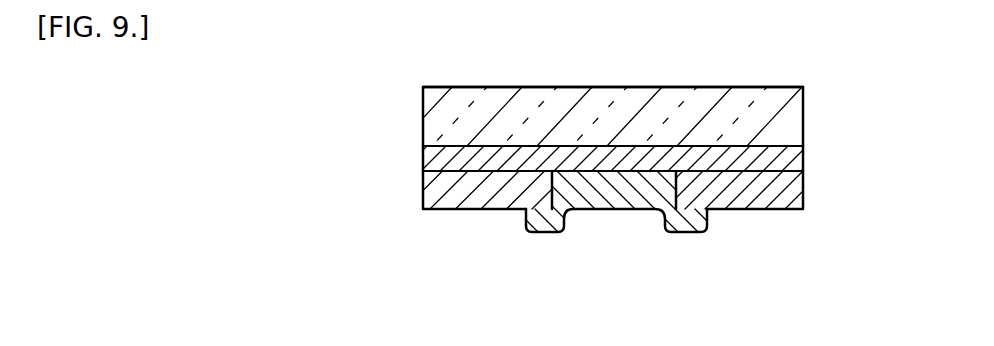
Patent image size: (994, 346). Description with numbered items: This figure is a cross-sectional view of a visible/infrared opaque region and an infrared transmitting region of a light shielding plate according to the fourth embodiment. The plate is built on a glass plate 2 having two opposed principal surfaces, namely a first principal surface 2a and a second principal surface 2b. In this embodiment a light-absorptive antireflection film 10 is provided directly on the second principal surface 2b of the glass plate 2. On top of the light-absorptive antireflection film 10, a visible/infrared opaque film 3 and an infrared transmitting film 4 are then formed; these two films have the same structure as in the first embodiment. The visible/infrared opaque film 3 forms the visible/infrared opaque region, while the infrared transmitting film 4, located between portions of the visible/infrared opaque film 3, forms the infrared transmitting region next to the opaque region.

The glass plate 2 is at (803, 120).
The first principal surface 2a is at (448, 88).
The second principal surface 2b is at (446, 146).
The light-absorptive antireflection film 10 is at (803, 152).
The visible/infrared opaque film 3 is at (803, 195).
The infrared transmitting film 4 is at (677, 223).